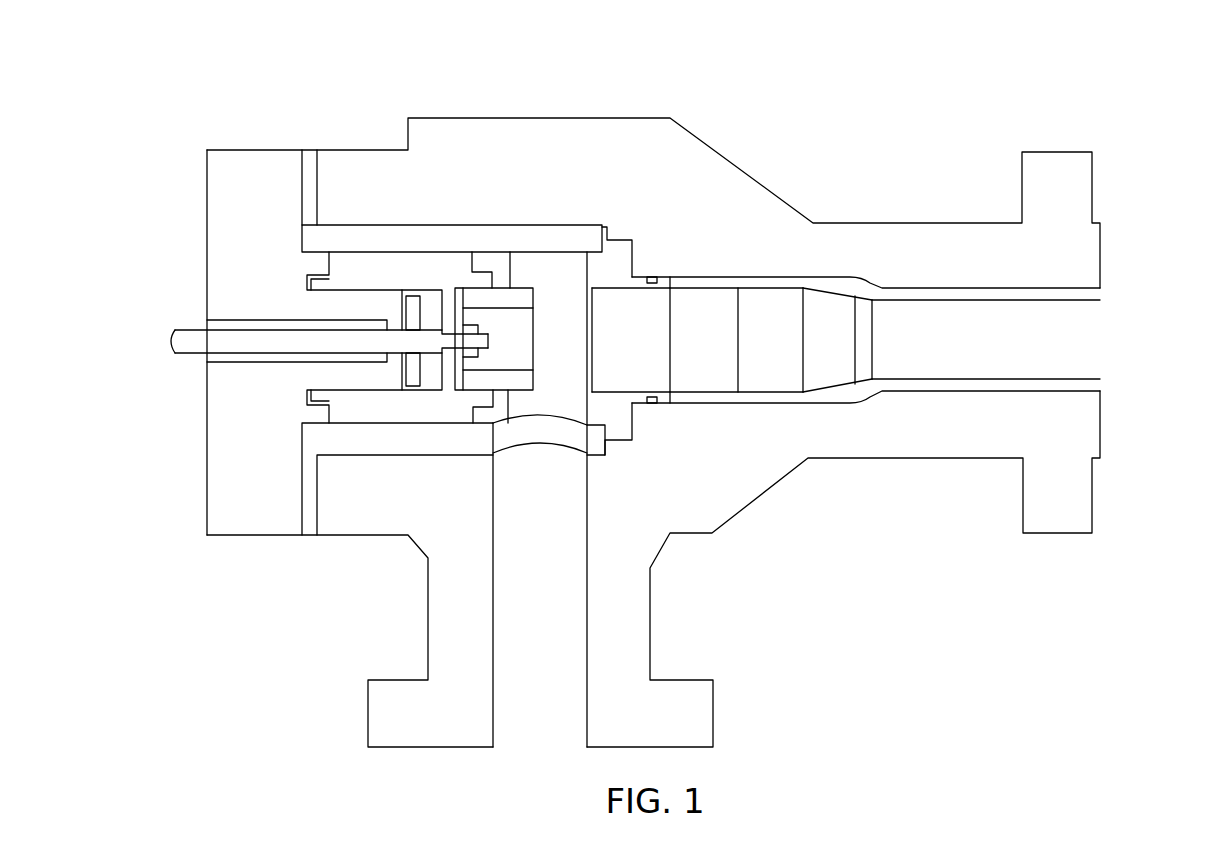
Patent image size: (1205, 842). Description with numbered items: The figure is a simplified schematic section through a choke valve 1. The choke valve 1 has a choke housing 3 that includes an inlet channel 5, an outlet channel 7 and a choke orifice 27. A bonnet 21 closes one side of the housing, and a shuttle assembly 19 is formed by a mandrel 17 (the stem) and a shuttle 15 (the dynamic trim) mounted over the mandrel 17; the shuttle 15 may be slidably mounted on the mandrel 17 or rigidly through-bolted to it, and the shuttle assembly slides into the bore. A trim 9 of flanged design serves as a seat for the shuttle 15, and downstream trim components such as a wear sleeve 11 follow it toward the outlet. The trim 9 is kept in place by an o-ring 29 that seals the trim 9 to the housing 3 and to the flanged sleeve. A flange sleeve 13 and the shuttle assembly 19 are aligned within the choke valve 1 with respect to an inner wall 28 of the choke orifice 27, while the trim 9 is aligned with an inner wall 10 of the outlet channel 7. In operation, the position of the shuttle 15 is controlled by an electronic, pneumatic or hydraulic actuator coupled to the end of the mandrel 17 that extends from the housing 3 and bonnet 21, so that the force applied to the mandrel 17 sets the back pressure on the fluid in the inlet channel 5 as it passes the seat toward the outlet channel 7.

The choke valve 1 is at (286, 72).
The choke housing 3 is at (557, 118).
The inlet channel 5 is at (545, 625).
The outlet channel 7 is at (1088, 344).
The trim 9 is at (620, 423).
The inner wall of the outlet channel 10 is at (793, 395).
The wear sleeve 11 is at (758, 395).
The flange sleeve 13 is at (378, 240).
The shuttle 15 is at (481, 383).
The mandrel 17 is at (190, 340).
The shuttle assembly 19 is at (363, 415).
The bonnet 21 is at (252, 158).
The choke orifice 27 is at (570, 277).
The inner wall of choke orifice 28 is at (542, 255).
The o-ring 29 is at (650, 277).